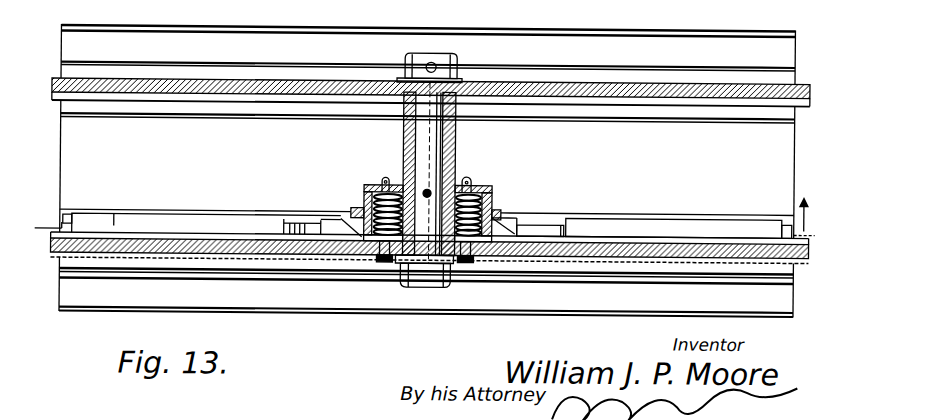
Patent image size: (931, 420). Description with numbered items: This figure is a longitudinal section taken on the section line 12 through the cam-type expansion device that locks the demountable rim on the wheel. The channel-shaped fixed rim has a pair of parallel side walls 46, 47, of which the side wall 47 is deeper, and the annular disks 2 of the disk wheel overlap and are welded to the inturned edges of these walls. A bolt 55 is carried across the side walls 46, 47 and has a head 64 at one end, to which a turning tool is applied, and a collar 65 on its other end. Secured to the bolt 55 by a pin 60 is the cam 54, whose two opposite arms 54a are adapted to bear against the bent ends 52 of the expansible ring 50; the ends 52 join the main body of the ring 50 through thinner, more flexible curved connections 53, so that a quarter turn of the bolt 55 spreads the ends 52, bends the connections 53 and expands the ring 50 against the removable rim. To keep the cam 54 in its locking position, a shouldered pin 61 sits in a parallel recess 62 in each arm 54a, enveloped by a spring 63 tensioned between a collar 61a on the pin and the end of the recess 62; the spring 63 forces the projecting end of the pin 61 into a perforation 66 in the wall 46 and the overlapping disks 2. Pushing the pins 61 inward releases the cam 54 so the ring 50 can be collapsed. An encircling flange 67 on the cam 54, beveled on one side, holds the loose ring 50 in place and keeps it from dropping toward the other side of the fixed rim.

The annular disks 2 is at (288, 80).
The section line 12 is at (427, 207).
The side wall of fixed rim 46 is at (140, 246).
The side wall of fixed rim 47 is at (158, 89).
The expansible ring 50 is at (240, 221).
The bent ends 52 is at (346, 224).
The curved connections 53 is at (312, 224).
The cam 54 is at (401, 181).
The cam arms 54a is at (491, 182).
The bolt 55 is at (432, 142).
The pin 60 is at (433, 190).
The shouldered pin 61 is at (391, 258).
The collar 61a is at (372, 246).
The recess 62 is at (356, 206).
The spring 63 is at (383, 181).
The head of bolt 64 is at (428, 280).
The collar 65 is at (448, 54).
The perforation 66 is at (488, 240).
The encircling flange 67 is at (352, 207).